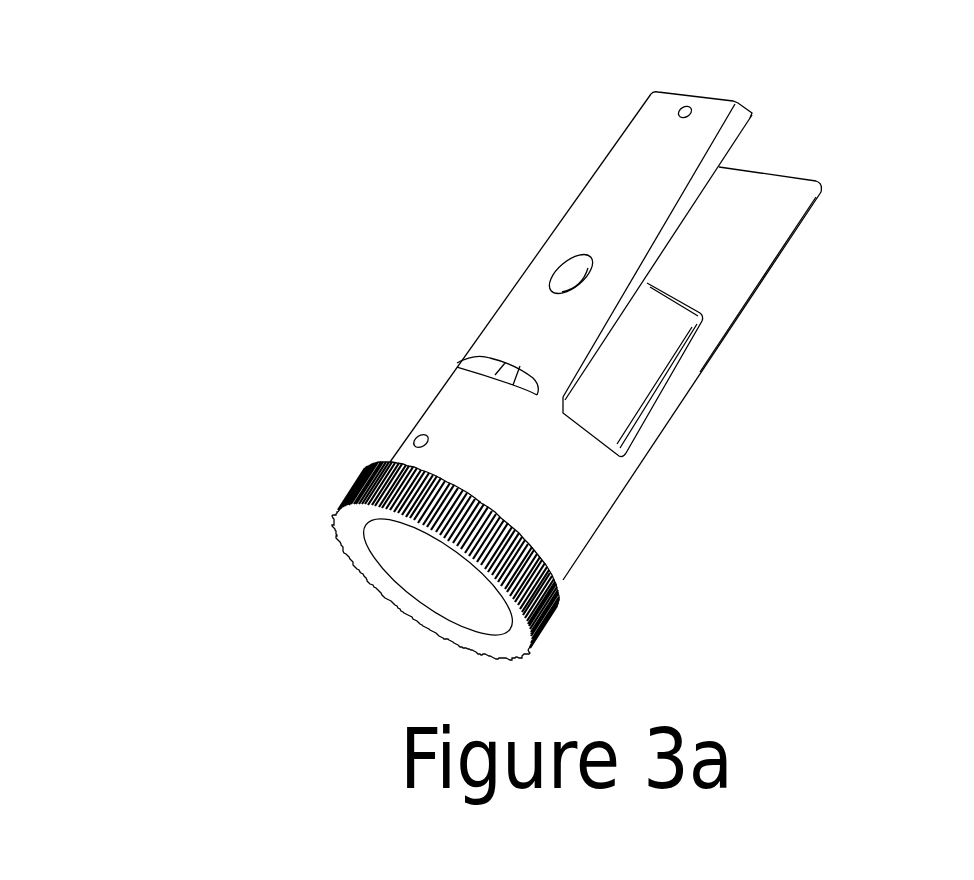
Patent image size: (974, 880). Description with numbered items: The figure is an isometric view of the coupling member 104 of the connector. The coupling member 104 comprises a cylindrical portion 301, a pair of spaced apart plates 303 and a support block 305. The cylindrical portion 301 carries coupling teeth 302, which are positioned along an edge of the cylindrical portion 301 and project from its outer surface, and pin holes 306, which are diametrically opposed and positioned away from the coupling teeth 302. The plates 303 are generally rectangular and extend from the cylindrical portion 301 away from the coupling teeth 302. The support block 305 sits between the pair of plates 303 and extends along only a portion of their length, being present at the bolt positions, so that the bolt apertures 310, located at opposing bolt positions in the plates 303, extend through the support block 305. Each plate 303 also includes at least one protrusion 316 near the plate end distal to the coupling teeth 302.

The coupling member 104 is at (433, 245).
The cylindrical portion 301 is at (595, 538).
The coupling teeth 302 is at (487, 558).
The plates 303 is at (712, 151).
The support block 305 is at (638, 375).
The pin holes 306 is at (413, 447).
The bolt apertures 310 is at (590, 262).
The protrusions 316 is at (691, 112).